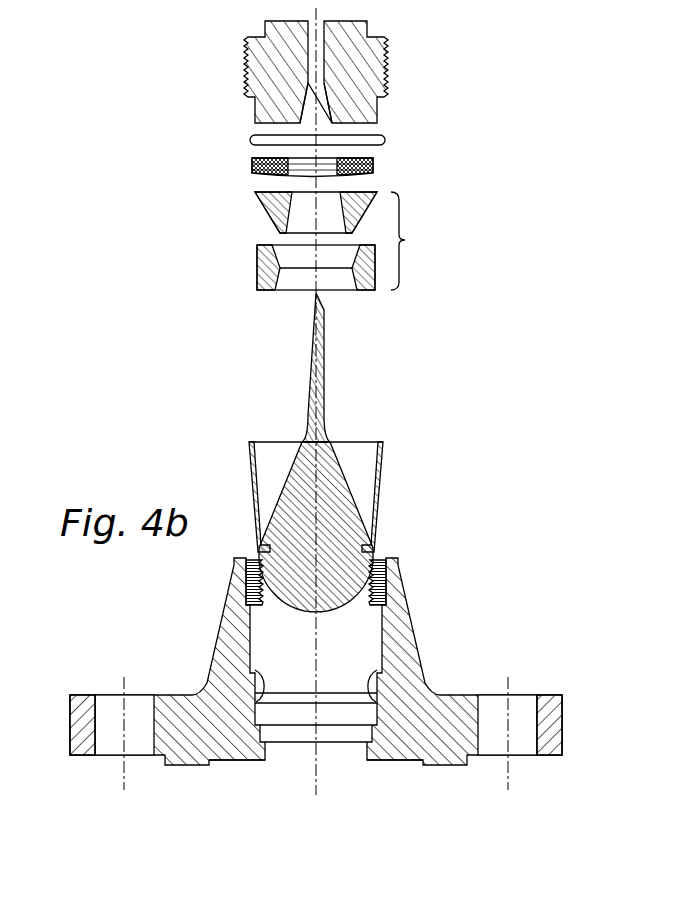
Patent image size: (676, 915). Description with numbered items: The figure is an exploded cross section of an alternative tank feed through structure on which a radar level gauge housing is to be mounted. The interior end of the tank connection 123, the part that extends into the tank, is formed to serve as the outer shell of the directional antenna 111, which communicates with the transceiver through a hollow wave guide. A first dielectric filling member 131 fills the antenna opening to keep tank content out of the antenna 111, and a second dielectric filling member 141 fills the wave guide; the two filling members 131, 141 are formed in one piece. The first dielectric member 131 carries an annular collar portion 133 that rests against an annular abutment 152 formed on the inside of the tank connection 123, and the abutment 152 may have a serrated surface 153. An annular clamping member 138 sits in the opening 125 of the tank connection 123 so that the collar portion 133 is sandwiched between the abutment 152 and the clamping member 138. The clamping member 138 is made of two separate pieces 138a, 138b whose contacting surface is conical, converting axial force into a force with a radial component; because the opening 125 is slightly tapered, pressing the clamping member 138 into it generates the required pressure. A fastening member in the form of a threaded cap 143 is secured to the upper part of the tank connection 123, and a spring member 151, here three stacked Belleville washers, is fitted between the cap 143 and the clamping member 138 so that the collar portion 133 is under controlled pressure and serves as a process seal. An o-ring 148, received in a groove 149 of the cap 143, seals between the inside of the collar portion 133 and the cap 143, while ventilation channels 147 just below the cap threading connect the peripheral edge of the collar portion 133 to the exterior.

The directional antenna 111 is at (336, 752).
The tank connection 123 is at (408, 647).
The opening 125 is at (361, 665).
The first dielectric filling member 131 is at (318, 472).
The annular collar portion 133 is at (381, 490).
The annular clamping member 138 is at (421, 241).
The first clamping member piece 138a is at (270, 210).
The second clamping member piece 138b is at (260, 277).
The second dielectric filling member 141 is at (323, 340).
The threaded cap 143 is at (360, 106).
The ventilation channels 147 is at (387, 607).
The o-ring 148 is at (383, 141).
The groove 149 is at (255, 107).
The spring member 151 is at (373, 159).
The annular abutment 152 is at (256, 667).
The serrated surface 153 is at (367, 680).